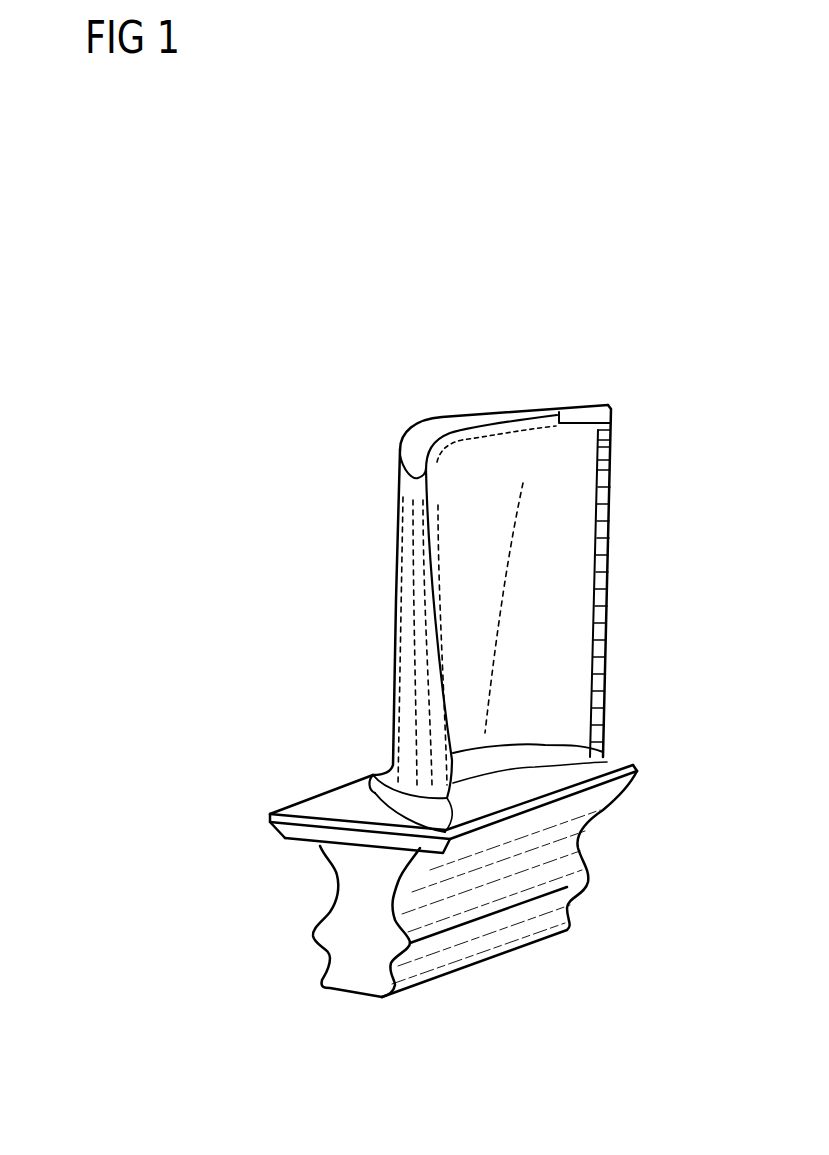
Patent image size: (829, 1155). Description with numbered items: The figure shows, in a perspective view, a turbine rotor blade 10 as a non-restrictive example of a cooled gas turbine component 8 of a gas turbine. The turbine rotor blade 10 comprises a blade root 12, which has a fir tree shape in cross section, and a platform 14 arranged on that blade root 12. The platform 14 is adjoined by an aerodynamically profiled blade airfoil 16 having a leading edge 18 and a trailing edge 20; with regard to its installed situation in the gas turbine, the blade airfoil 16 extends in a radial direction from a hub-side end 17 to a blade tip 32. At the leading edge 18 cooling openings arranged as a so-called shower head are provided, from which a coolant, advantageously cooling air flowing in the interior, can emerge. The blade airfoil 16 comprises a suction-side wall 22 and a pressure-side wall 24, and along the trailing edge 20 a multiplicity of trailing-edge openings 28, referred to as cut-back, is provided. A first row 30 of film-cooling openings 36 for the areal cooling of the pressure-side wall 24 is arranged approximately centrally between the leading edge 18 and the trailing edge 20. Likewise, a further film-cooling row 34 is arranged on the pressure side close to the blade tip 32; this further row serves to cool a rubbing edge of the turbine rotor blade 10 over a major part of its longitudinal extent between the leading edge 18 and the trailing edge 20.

The cooled gas turbine component 8 is at (498, 634).
The turbine rotor blade 10 is at (612, 376).
The blade root 12 is at (353, 883).
The platform 14 is at (537, 790).
The blade airfoil 16 is at (499, 634).
The hub-side end 17 is at (553, 756).
The leading edge 18 is at (427, 533).
The trailing edge 20 is at (613, 513).
The suction-side wall 22 is at (380, 440).
The pressure-side wall 24 is at (545, 578).
The trailing-edge openings 28 is at (600, 660).
The first row of film-cooling openings 30 is at (492, 650).
The blade tip 32 is at (634, 412).
The further film-cooling row 34 is at (496, 400).
The film-cooling openings 36 is at (472, 440).